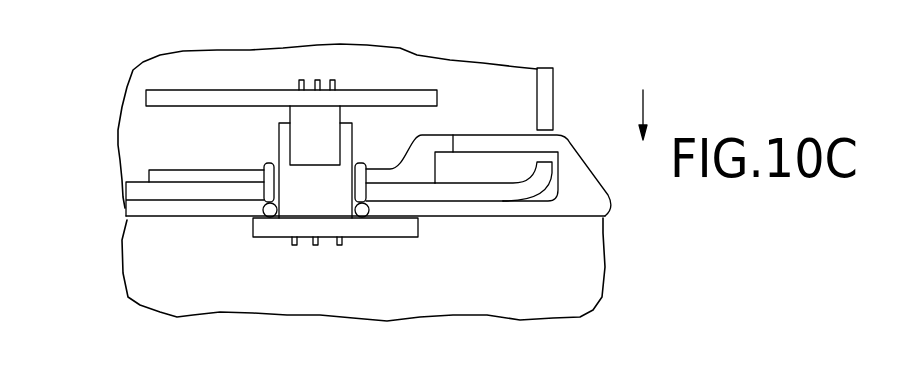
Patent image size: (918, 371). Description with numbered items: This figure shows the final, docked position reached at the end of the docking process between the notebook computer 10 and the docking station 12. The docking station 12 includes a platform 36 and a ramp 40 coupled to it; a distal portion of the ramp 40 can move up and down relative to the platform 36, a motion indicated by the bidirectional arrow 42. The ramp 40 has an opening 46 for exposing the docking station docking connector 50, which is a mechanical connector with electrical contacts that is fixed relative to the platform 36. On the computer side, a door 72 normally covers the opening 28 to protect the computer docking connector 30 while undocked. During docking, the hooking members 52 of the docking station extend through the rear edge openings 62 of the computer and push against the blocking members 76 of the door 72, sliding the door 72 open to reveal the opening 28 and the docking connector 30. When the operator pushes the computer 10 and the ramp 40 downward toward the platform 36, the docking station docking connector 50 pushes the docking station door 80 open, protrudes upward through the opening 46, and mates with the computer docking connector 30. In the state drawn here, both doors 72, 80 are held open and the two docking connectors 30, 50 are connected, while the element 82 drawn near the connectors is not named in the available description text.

The connector assembly 10 is at (407, 52).
The connector 12 is at (630, 240).
The contact 28 is at (268, 154).
The circuit board 30 is at (343, 113).
The housing 36 is at (603, 278).
The substrate 40 is at (125, 206).
The insertion direction 42 is at (643, 98).
The solder ball 46 is at (268, 218).
The cover 50 is at (353, 138).
The latch member 52 is at (505, 137).
The actuator 62 is at (563, 118).
The contact pad 72 is at (172, 167).
The shell 76 is at (432, 136).
The contact tail 80 is at (263, 163).
The contact 82 is at (362, 172).